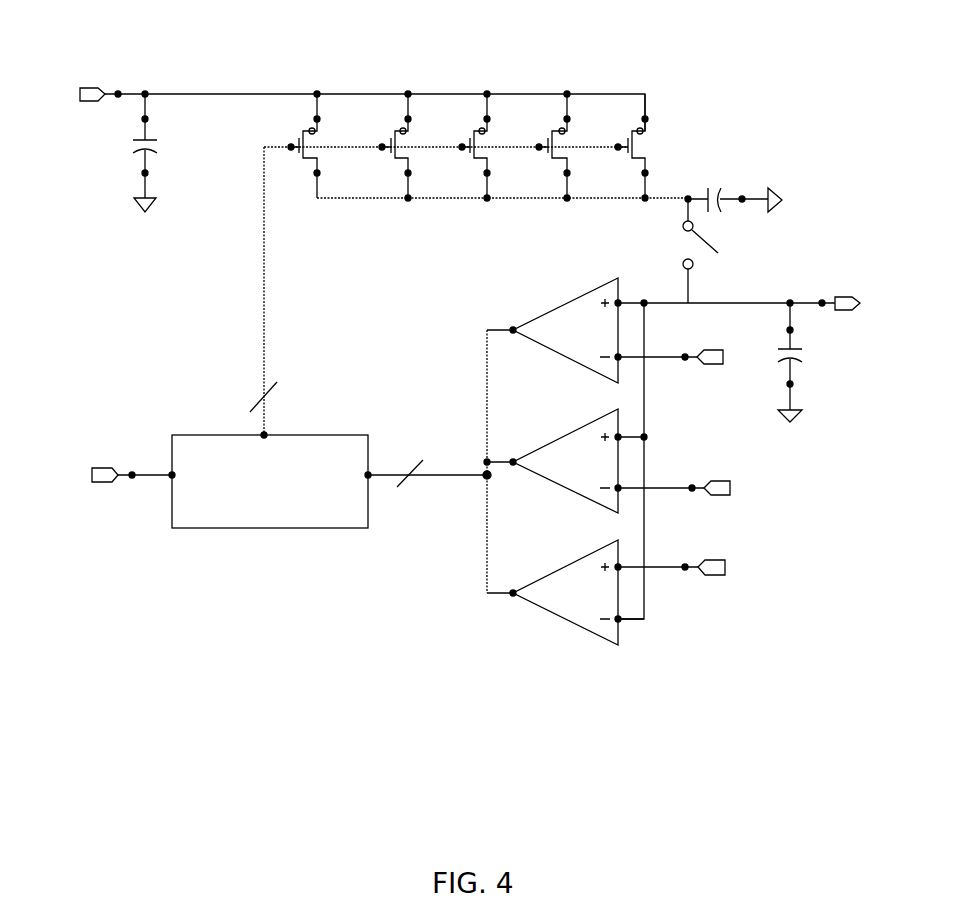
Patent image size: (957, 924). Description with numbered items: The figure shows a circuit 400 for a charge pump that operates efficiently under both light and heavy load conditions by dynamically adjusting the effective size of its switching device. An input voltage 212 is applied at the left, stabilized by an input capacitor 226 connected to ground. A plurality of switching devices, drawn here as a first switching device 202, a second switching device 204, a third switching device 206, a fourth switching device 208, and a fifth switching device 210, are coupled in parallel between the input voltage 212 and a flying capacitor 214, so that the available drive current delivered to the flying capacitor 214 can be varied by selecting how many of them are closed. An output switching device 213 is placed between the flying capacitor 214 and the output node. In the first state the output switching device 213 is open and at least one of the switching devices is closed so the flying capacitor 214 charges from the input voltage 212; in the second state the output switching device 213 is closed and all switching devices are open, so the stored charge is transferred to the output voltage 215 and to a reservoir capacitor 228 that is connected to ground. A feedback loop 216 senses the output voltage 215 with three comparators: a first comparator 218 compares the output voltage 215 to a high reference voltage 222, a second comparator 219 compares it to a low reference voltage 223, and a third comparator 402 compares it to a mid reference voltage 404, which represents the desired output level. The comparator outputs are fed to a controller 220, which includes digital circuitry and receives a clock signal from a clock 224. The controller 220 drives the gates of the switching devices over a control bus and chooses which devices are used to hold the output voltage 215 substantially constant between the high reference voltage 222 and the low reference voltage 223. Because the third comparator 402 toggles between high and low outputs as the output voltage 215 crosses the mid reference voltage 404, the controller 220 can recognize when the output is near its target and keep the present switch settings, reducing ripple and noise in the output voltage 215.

The circuit 400 is at (307, 41).
The input voltage 212 is at (95, 87).
The input capacitor 226 is at (138, 152).
The first switching device 202 is at (303, 131).
The second switching device 204 is at (397, 131).
The third switching device 206 is at (476, 131).
The fourth switching device 208 is at (554, 131).
The fifth switching device 210 is at (634, 131).
The flying capacitor 214 is at (718, 193).
The output switching device 213 is at (715, 252).
The first comparator 218 is at (605, 282).
The third comparator 402 is at (607, 410).
The second comparator 219 is at (590, 633).
The feedback loop 216 is at (685, 706).
The output voltage 215 is at (848, 293).
The high reference voltage 222 is at (726, 358).
The reservoir capacitor 228 is at (797, 362).
The mid reference voltage 404 is at (726, 496).
The low reference voltage 223 is at (718, 576).
The controller 220 is at (263, 532).
The clock 224 is at (107, 466).